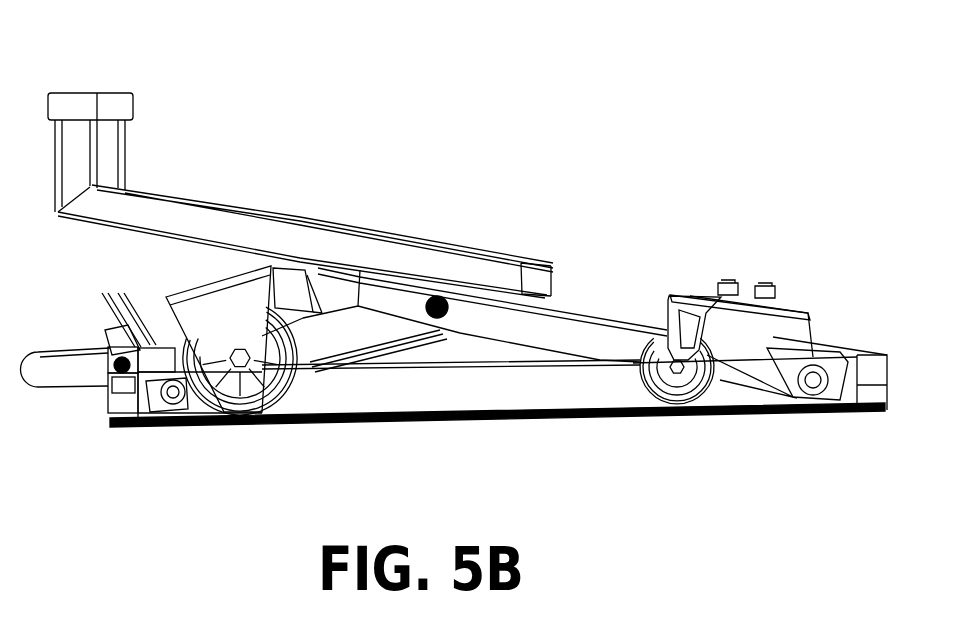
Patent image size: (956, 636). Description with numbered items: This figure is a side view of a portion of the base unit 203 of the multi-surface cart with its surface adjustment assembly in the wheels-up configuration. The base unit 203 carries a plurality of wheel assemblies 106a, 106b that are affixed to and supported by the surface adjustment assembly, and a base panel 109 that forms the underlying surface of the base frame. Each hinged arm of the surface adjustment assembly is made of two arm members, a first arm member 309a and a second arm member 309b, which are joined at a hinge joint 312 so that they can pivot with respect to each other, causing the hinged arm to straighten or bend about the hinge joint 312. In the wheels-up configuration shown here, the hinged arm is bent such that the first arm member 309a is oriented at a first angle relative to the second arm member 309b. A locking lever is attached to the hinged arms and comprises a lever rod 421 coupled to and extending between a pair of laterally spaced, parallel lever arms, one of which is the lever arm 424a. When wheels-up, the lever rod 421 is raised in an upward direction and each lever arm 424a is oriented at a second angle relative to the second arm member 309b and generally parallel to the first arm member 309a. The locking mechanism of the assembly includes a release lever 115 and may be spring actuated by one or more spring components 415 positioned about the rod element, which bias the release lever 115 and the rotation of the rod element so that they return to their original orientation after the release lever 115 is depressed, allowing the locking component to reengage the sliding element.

The base unit 203 is at (729, 117).
The lever rod 421 is at (98, 95).
The lever arm 424a is at (363, 243).
The first arm member 309a is at (593, 335).
The hinge joint 312 is at (437, 318).
The second arm member 309b is at (342, 338).
The wheel assembly 106b is at (227, 408).
The spring component 415 is at (118, 364).
The release lever 115 is at (53, 370).
The wheel assembly 106a is at (680, 390).
The base panel 109 is at (873, 407).